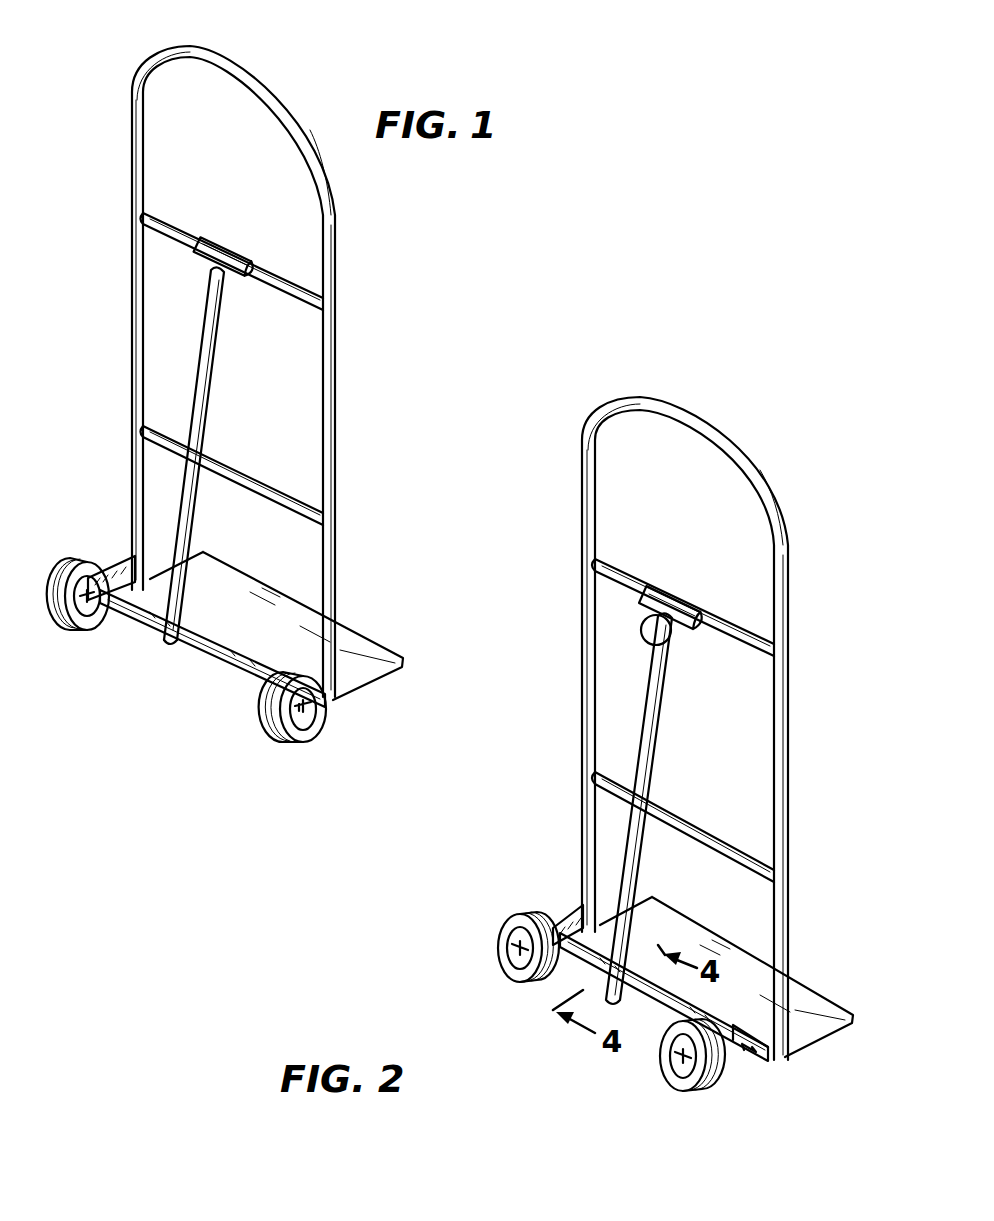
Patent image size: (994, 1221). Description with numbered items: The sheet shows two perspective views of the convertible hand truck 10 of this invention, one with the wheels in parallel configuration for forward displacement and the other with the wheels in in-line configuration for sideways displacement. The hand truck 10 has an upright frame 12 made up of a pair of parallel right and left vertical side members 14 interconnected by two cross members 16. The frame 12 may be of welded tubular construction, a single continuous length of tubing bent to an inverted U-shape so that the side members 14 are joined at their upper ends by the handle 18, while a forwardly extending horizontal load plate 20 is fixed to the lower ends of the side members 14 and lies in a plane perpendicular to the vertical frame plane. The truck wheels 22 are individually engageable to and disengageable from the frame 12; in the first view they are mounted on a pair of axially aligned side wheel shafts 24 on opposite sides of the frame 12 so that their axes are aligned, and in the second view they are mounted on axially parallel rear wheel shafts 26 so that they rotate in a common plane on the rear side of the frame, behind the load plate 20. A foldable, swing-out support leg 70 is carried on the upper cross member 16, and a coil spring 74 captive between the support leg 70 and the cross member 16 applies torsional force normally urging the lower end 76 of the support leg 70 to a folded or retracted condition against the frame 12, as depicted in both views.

In FIG. 1, the convertible hand truck 10 is at (378, 292).
In FIG. 2, the convertible hand truck 10 is at (802, 522).
In FIG. 1, the upright frame 12 is at (336, 479).
In FIG. 2, the upright frame 12 is at (581, 662).
In FIG. 1, the vertical side members 14 is at (131, 275).
In FIG. 2, the vertical side members 14 is at (580, 535).
In FIG. 1, the cross members 16 is at (276, 297).
In FIG. 2, the cross members 16 is at (633, 570).
In FIG. 1, the handle 18 is at (264, 70).
In FIG. 2, the handle 18 is at (666, 398).
In FIG. 1, the load plate 20 is at (357, 630).
In FIG. 2, the load plate 20 is at (706, 940).
In FIG. 1, the truck wheels 22 is at (80, 552).
In FIG. 2, the truck wheels 22 is at (496, 918).
In FIG. 1, the side wheel shafts 24 is at (313, 703).
In FIG. 2, the side wheel shafts 24 is at (750, 1054).
In FIG. 1, the rear wheel shafts 26 is at (86, 608).
In FIG. 2, the rear wheel shafts 26 is at (510, 946).
In FIG. 1, the support leg 70 is at (205, 354).
In FIG. 2, the support leg 70 is at (650, 718).
In FIG. 1, the coil spring 74 is at (247, 268).
In FIG. 2, the coil spring 74 is at (707, 622).
In FIG. 1, the lower end of the support leg 76 is at (160, 643).